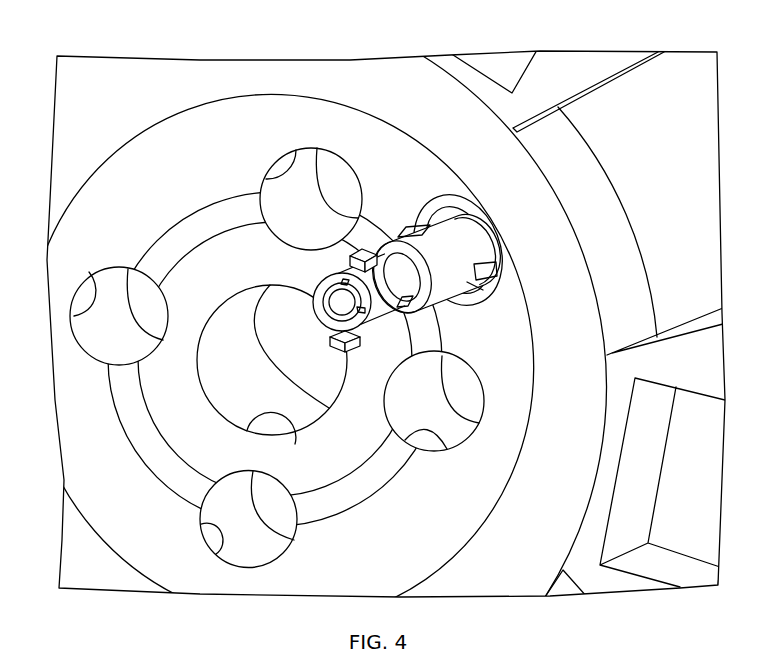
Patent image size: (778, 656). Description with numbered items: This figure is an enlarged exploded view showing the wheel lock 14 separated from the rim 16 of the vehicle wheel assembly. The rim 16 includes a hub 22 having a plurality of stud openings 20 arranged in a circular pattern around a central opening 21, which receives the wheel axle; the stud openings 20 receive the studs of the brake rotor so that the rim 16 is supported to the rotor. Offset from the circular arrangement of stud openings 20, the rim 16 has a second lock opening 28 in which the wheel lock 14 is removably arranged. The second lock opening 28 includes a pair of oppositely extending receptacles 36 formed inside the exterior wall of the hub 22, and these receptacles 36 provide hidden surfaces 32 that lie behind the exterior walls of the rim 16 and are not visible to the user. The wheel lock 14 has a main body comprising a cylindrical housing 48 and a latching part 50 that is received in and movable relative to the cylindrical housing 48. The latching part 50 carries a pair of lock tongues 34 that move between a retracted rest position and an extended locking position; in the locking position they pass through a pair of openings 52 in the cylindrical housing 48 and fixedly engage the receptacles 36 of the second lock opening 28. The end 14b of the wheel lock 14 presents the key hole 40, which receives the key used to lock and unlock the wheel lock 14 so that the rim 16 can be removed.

The wheel lock 14 is at (384, 192).
The shaft end 14b is at (313, 274).
The rim 16 is at (611, 44).
The stud openings 20 is at (266, 179).
The central opening 21 is at (296, 447).
The hub 22 is at (181, 412).
The second lock opening 28 is at (478, 298).
The hidden surface 32 is at (494, 268).
The lock tongues 34 is at (350, 252).
The receptacles 36 is at (493, 250).
The key hole 40 is at (326, 313).
The cylindrical housing 48 is at (452, 323).
The latching part 50 is at (366, 367).
The openings 52 is at (408, 227).